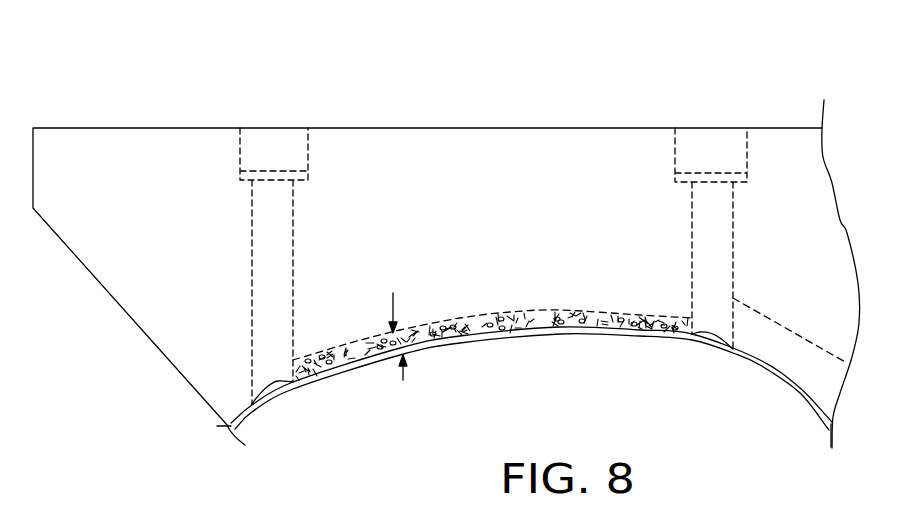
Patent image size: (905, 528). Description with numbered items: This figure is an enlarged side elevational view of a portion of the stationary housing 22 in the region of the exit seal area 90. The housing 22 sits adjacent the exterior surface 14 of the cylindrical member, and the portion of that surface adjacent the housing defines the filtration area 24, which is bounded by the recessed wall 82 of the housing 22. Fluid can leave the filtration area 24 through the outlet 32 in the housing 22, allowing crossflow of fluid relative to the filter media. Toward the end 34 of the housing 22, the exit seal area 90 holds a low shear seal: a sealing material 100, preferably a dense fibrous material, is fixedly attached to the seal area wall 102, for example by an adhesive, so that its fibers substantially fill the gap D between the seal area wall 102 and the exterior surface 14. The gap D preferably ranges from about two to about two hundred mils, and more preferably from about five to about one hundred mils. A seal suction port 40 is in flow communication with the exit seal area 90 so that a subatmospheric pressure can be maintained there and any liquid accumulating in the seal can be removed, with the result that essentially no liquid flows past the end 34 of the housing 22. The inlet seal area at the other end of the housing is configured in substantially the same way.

The stationary housing 22 is at (546, 152).
The seal suction port 40 is at (282, 147).
The outlet 32 is at (709, 147).
The recessed wall 82 is at (795, 322).
The exterior surface 14 is at (518, 340).
The sealing material 100 is at (574, 320).
The seal area wall 102 is at (614, 310).
The exit seal area 90 is at (494, 312).
The end of the housing 34 is at (227, 422).
The filtration area 24 is at (783, 360).
The gap D is at (402, 353).